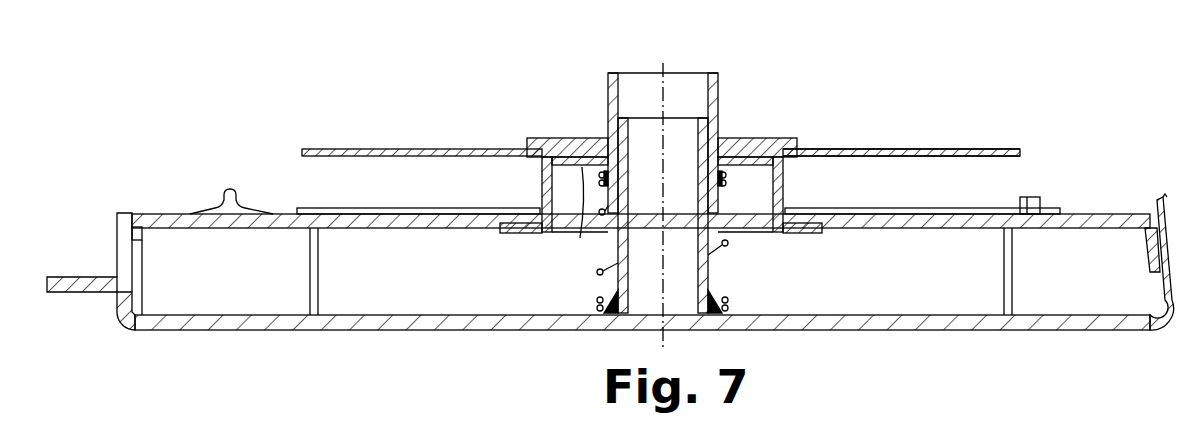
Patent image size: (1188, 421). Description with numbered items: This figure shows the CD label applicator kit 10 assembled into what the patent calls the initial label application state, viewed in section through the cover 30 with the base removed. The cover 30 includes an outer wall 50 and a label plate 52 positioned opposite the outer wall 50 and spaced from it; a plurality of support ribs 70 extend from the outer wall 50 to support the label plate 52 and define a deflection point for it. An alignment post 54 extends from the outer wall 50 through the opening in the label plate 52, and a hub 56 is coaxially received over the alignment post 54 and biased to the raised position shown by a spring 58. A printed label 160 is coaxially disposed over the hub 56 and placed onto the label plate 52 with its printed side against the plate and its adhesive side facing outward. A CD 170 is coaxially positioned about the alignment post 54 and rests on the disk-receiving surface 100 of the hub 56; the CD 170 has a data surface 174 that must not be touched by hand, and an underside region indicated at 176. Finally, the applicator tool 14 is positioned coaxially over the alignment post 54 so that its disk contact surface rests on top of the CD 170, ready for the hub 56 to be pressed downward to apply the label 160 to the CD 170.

The CD label applicator kit 10 is at (900, 93).
The applicator tool 14 is at (724, 89).
The cover 30 is at (495, 331).
The outer wall 50 is at (220, 320).
The label plate 52 is at (863, 233).
The alignment post 54 is at (640, 109).
The hub 56 is at (758, 175).
The spring 58 is at (601, 274).
The support ribs 70 is at (313, 265).
The disk-receiving surface 100 is at (572, 217).
The printed label 160 is at (962, 208).
The CD 170 is at (836, 147).
The data surface 174 is at (933, 149).
The lower surface of support plate 176 is at (858, 160).